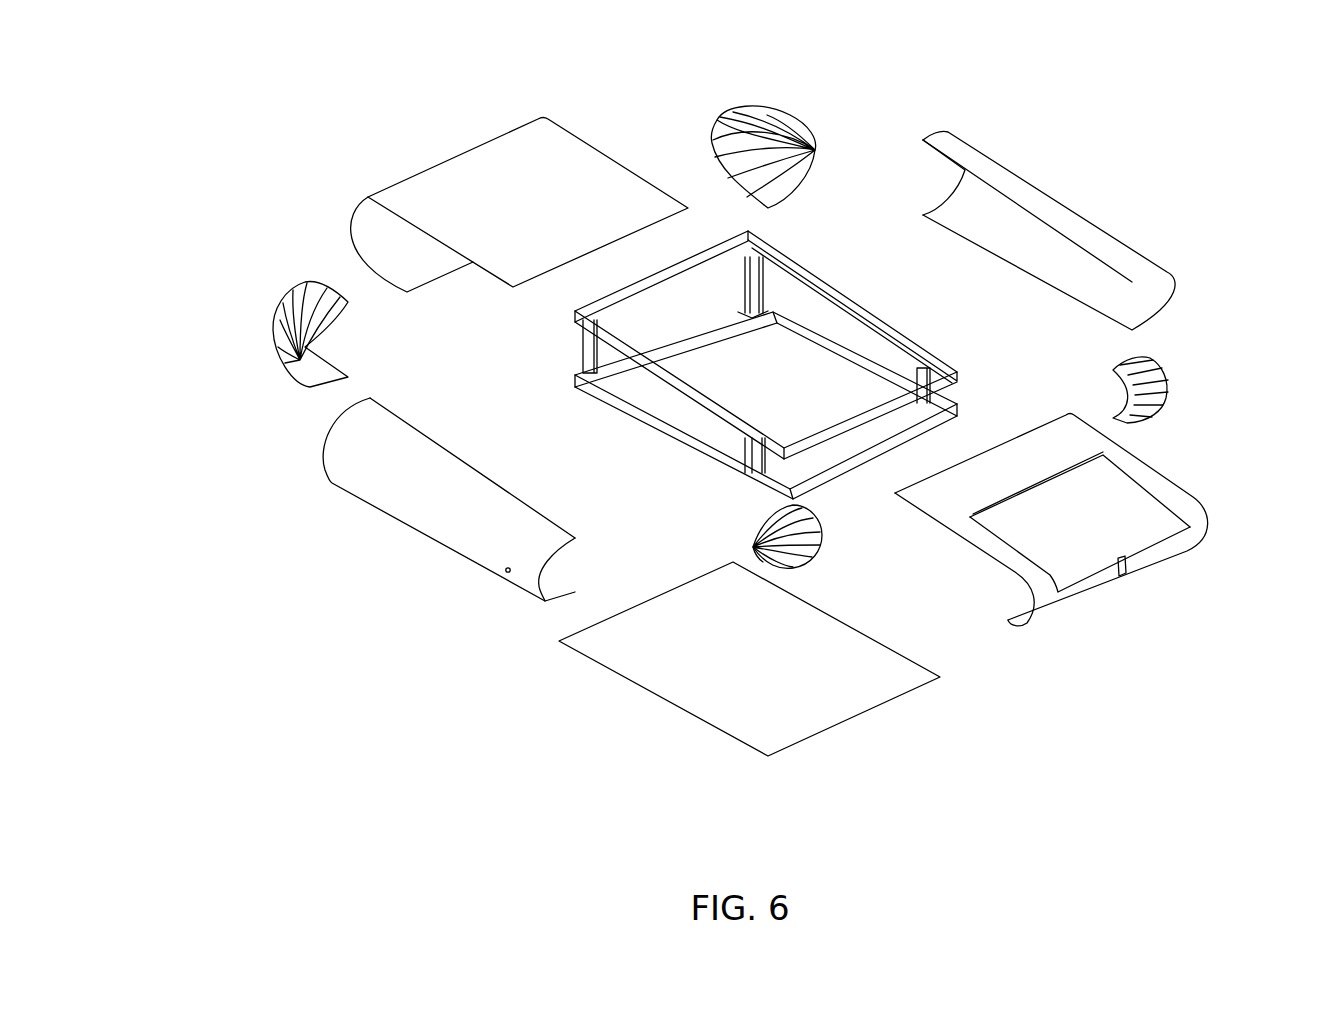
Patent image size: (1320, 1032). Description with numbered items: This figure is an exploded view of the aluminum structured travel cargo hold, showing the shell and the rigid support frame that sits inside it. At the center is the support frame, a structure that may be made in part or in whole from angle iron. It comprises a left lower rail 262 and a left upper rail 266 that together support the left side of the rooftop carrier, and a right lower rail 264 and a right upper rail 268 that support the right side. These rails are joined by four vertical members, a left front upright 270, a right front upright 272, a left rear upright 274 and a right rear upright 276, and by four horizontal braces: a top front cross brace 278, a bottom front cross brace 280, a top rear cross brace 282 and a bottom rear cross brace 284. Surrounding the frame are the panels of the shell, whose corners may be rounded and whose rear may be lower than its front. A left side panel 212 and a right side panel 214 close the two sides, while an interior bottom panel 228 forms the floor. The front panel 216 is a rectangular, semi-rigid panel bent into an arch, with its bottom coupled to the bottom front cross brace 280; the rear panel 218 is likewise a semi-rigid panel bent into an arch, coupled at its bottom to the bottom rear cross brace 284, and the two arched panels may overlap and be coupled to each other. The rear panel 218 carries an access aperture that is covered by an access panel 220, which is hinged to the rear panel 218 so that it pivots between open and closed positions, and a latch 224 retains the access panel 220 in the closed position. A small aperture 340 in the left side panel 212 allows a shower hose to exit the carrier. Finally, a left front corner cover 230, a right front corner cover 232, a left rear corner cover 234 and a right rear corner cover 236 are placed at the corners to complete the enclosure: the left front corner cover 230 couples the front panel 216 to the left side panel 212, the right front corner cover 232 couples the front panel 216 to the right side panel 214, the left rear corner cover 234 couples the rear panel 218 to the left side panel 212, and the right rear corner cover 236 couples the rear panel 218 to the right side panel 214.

The left side panel 212 is at (427, 520).
The right side panel 214 is at (1053, 212).
The front panel 216 is at (445, 183).
The rear panel 218 is at (1046, 603).
The access panel 220 is at (1152, 515).
The latch 224 is at (1125, 574).
The interior bottom panel 228 is at (671, 685).
The left front corner cover 230 is at (273, 332).
The right front corner cover 232 is at (773, 118).
The left rear corner cover 234 is at (818, 560).
The right rear corner cover 236 is at (1147, 388).
The left lower rail 262 is at (640, 415).
The right lower rail 264 is at (813, 345).
The left upper rail 266 is at (713, 407).
The right upper rail 268 is at (817, 283).
The left front upright 270 is at (580, 352).
The right front upright 272 is at (752, 287).
The left rear upright 274 is at (753, 460).
The right rear upright 276 is at (922, 368).
The top front cross brace 278 is at (657, 280).
The bottom front cross brace 280 is at (628, 384).
The top rear cross brace 282 is at (853, 423).
The bottom rear cross brace 284 is at (767, 453).
The aperture 340 is at (507, 574).